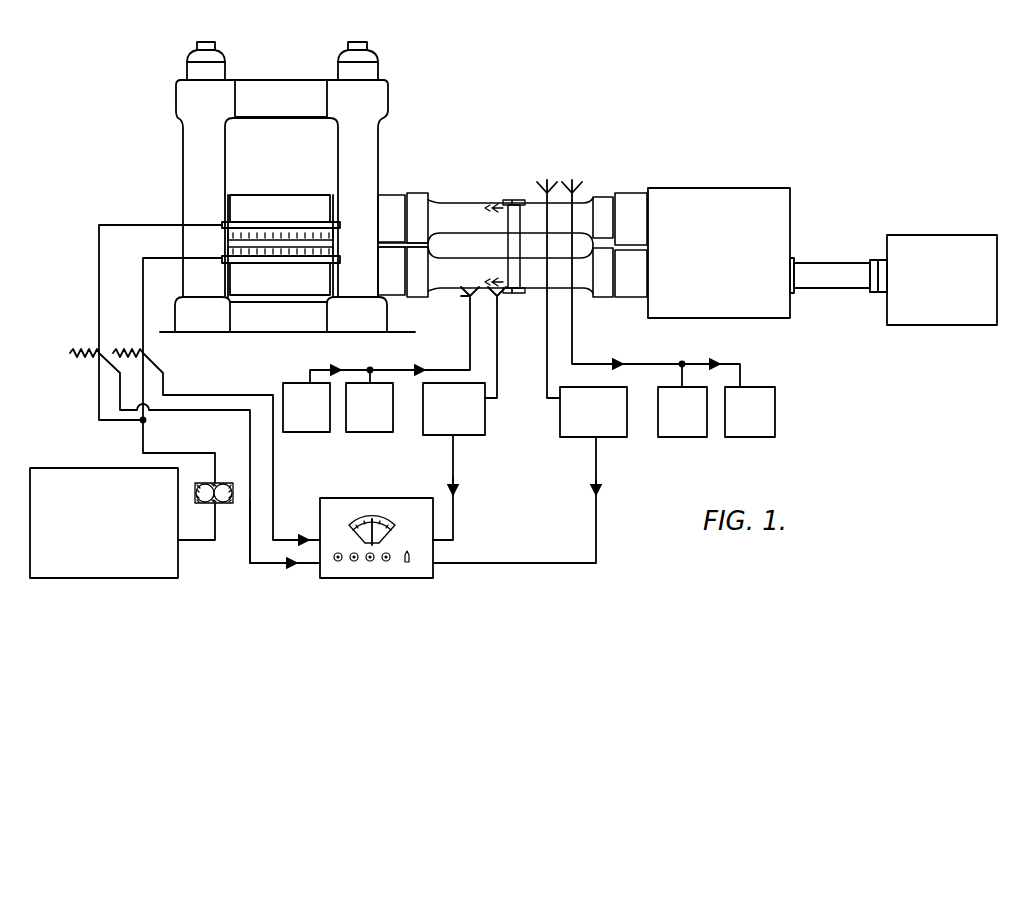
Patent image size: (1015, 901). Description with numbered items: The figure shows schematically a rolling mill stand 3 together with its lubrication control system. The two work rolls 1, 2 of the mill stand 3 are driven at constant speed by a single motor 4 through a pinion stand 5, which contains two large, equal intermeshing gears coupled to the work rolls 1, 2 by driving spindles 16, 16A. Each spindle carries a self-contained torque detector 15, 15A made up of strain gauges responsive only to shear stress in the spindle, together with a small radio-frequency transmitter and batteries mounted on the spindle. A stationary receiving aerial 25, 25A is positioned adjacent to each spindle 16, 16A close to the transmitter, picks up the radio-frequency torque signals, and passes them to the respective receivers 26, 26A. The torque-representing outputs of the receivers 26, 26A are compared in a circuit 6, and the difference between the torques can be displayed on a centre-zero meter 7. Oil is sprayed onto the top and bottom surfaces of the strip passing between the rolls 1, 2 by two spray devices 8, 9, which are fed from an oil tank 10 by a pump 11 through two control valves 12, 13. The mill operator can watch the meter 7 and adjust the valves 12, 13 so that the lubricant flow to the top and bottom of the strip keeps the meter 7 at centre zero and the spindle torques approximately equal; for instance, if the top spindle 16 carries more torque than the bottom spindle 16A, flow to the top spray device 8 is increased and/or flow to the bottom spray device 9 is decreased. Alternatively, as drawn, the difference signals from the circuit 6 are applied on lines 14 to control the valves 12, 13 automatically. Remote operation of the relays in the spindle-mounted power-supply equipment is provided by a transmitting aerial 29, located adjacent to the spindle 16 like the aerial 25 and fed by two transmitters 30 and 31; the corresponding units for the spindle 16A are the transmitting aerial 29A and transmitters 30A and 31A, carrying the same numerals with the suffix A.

The work roll 1 is at (303, 200).
The work roll 2 is at (283, 288).
The rolling mill stand 3 is at (367, 135).
The motor 4 is at (933, 240).
The pinion stand 5 is at (710, 193).
The circuit 6 is at (422, 503).
The centre-zero meter 7 is at (373, 508).
The spray device 8 is at (244, 223).
The spray device 9 is at (273, 263).
The oil tank 10 is at (87, 477).
The pump 11 is at (223, 507).
The control valve 12 is at (90, 345).
The control valve 13 is at (134, 345).
The lines 14 is at (275, 562).
The torque detector 15 is at (508, 197).
The torque detector 15A is at (517, 293).
The driving spindle 16 is at (532, 205).
The driving spindle 16A is at (580, 278).
The receiving aerial 25 is at (550, 183).
The receiving aerial 25A is at (501, 345).
The receiver 26 is at (578, 428).
The receiver 26A is at (472, 428).
The transmitting aerial 29 is at (580, 193).
The transmitting aerial 29A is at (466, 307).
The transmitter 30 is at (683, 430).
The transmitter 30A is at (372, 425).
The transmitter 31 is at (751, 430).
The transmitter 31A is at (310, 425).